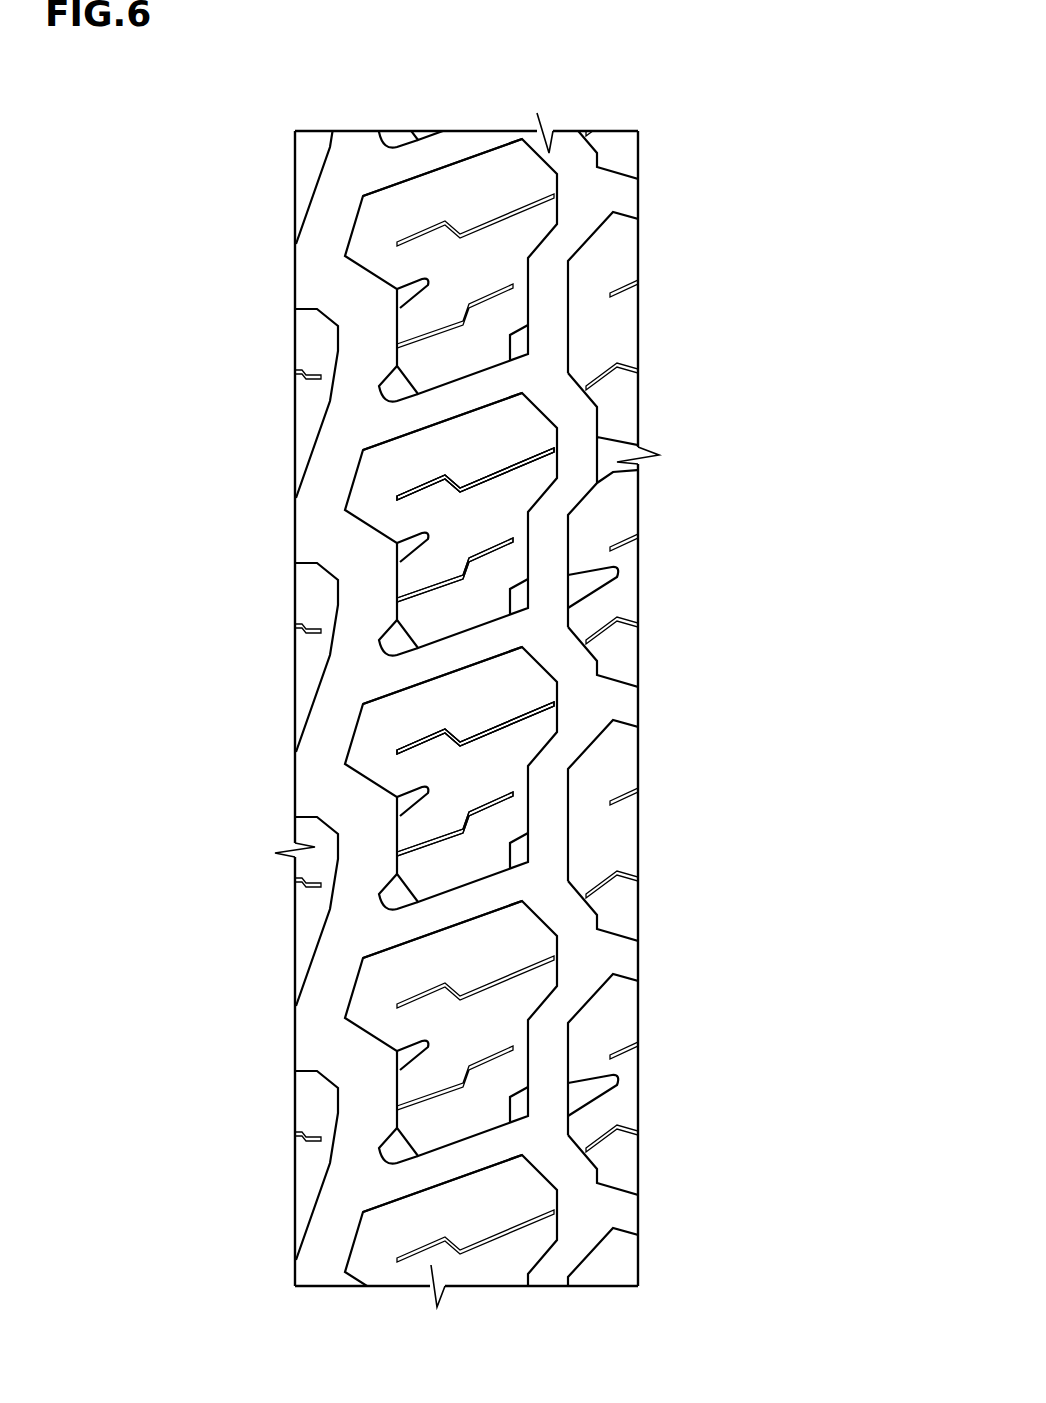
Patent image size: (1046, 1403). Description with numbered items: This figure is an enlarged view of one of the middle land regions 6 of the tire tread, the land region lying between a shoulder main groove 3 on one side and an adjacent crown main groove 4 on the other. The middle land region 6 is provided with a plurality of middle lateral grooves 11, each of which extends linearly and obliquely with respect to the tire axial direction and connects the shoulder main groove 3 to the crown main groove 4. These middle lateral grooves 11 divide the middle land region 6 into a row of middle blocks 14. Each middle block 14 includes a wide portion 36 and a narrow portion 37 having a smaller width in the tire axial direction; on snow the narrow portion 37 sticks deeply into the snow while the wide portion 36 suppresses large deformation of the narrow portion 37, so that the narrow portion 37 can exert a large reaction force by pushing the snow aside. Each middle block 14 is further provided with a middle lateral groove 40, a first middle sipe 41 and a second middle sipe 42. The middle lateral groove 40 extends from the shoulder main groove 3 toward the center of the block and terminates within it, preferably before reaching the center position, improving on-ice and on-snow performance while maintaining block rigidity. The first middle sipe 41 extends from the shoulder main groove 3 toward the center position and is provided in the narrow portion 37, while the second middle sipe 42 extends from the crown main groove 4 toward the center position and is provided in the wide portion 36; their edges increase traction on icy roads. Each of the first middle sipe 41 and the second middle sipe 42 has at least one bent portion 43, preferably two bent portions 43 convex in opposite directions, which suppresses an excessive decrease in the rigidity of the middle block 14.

The shoulder main groove 3 is at (343, 171).
The crown main groove 4 is at (574, 169).
The middle land region 6 is at (459, 187).
The middle lateral groove 11 is at (498, 377).
The middle block 14 is at (502, 247).
The wide portion 36 is at (482, 707).
The narrow portion 37 is at (485, 842).
The middle lateral groove 40 is at (394, 301).
The first middle sipe 41 is at (378, 391).
The second middle sipe 42 is at (503, 470).
The bent portion 43 is at (452, 490).